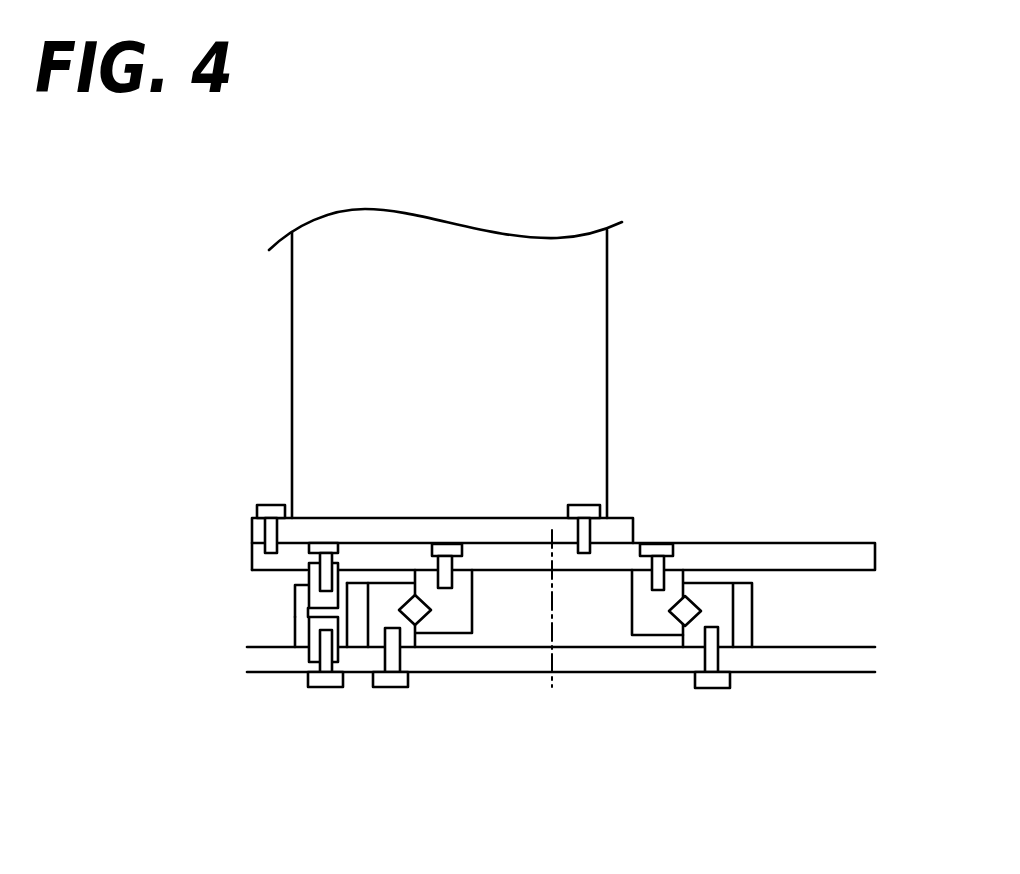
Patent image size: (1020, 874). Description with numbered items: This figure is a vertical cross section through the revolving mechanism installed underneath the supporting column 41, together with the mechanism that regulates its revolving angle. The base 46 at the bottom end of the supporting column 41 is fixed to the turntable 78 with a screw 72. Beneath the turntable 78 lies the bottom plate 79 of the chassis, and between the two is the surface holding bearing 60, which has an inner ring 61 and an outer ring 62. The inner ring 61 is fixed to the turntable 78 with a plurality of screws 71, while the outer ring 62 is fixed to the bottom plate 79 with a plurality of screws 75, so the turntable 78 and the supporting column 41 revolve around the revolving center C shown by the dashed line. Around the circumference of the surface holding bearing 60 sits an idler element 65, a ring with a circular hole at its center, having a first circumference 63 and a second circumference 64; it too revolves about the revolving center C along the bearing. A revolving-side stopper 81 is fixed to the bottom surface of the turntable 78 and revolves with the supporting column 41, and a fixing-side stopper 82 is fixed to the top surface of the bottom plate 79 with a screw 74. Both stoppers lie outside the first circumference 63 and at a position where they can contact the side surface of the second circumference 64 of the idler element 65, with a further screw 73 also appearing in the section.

The supporting column 41 is at (593, 363).
The base 46 is at (618, 528).
The turntable 78 is at (795, 548).
The bottom plate 79 is at (842, 660).
The revolving center C is at (548, 680).
The surface holding bearing 60 is at (663, 703).
The inner ring 61 is at (655, 623).
The outer ring 62 is at (697, 633).
The idler element 65 is at (401, 705).
The first circumference 63 is at (362, 635).
The second circumference 64 is at (343, 637).
The screw 71 is at (441, 544).
The screw 72 is at (273, 505).
The bolt 73 is at (323, 543).
The screw 74 is at (325, 687).
The screw 75 is at (397, 687).
The revolving-side stopper 81 is at (317, 602).
The fixing-side stopper 82 is at (317, 622).